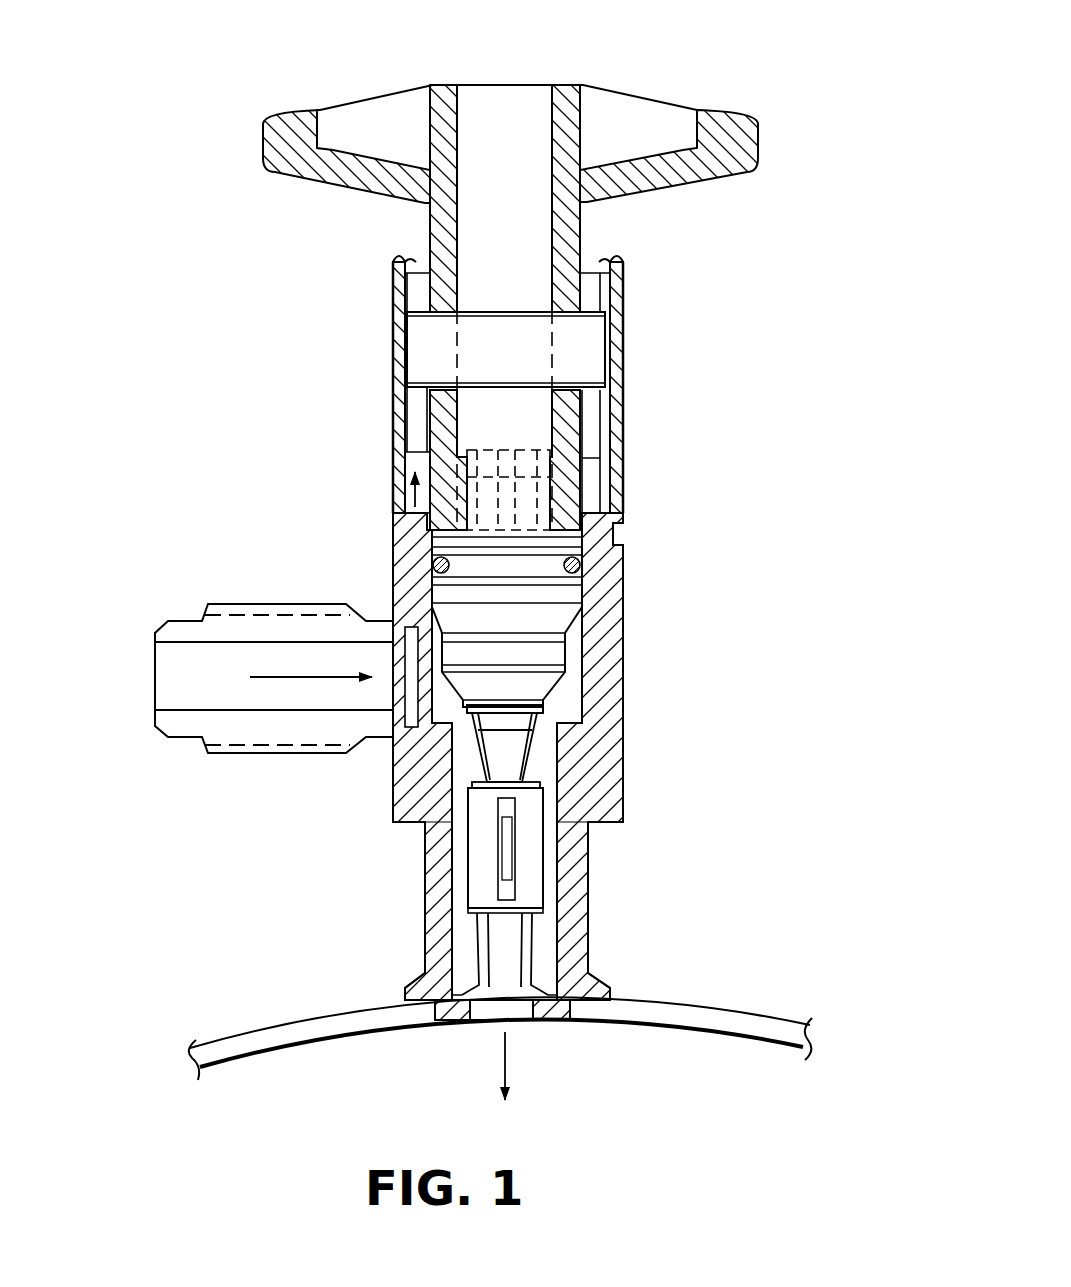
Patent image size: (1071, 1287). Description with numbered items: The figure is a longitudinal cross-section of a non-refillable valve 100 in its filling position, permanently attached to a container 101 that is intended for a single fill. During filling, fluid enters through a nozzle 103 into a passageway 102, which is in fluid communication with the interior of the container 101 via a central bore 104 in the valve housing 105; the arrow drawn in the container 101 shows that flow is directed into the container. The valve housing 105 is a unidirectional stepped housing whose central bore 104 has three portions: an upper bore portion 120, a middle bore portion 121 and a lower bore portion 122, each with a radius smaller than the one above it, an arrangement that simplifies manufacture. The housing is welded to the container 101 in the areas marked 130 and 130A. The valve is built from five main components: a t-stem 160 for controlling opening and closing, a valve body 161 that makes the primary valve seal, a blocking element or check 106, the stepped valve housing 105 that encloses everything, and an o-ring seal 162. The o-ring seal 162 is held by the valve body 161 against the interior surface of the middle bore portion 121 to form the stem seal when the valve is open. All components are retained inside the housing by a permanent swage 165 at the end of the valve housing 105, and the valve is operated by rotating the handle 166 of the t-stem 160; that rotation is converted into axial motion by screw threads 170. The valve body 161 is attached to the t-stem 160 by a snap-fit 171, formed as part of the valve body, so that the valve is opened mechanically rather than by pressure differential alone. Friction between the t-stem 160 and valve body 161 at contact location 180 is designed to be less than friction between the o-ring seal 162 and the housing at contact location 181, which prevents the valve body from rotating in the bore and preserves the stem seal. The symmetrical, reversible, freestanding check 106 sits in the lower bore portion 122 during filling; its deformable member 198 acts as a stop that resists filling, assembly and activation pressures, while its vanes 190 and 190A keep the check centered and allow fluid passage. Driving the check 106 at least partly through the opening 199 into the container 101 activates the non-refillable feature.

The non-refillable valve 100 is at (383, 346).
The container 101 is at (712, 1000).
The passageway (port) 102 is at (152, 668).
The nozzle 103 is at (242, 760).
The central bore 104 is at (462, 767).
The valve housing 105 is at (624, 688).
The blocking element (check) 106 is at (537, 945).
The upper bore portion 120 is at (410, 463).
The middle bore portion 121 is at (557, 710).
The lower bore portion 122 is at (550, 752).
The weld area 130 is at (400, 1000).
The weld area 130A is at (612, 1000).
The t-stem 160 is at (268, 172).
The valve body 161 is at (568, 652).
The o-ring seal 162 is at (583, 563).
The permanent swage 165 is at (628, 262).
The handle 166 is at (652, 95).
The screw threads 170 is at (607, 342).
The snap-fit 171 is at (548, 453).
The contact location 180 is at (430, 530).
The contact location 181 is at (424, 563).
The vane 190 is at (456, 830).
The vane 190A is at (552, 855).
The deformable member (stop) 198 is at (470, 936).
The opening 199 is at (490, 1008).